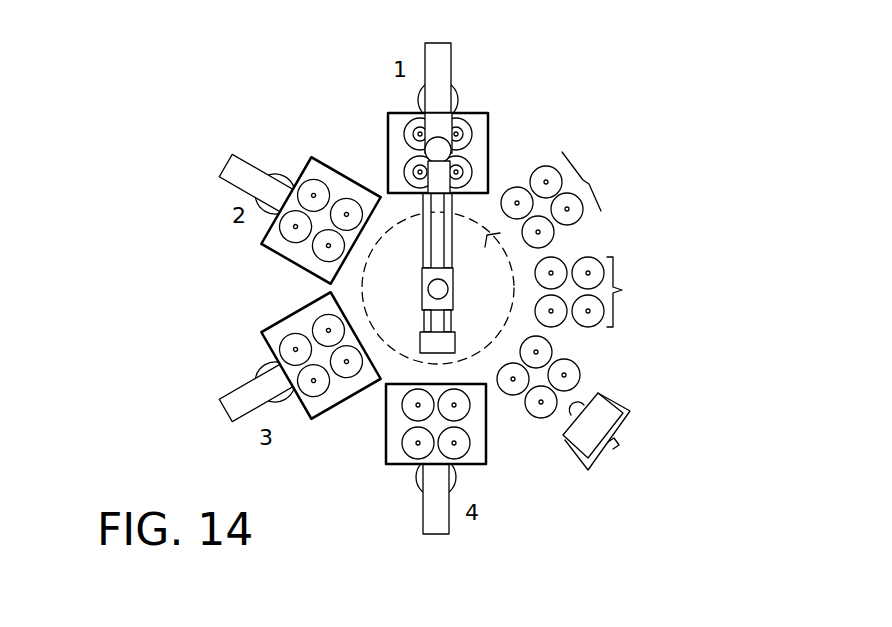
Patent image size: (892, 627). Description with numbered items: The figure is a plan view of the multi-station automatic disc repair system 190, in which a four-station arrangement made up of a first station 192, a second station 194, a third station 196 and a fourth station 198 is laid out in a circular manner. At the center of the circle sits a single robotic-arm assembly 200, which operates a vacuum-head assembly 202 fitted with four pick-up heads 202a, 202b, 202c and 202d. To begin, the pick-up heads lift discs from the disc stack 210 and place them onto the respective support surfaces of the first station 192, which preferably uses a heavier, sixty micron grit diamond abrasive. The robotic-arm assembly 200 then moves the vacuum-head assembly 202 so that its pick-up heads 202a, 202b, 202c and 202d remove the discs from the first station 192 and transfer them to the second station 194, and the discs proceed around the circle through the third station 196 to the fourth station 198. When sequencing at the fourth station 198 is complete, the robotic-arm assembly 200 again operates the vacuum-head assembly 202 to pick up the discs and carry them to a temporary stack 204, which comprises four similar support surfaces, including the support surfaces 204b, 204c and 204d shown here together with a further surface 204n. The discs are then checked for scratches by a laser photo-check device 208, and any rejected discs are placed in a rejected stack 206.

The automatic disc repair system 190 is at (167, 392).
The first station 192 is at (489, 113).
The second station 194 is at (315, 156).
The third station 196 is at (264, 331).
The fourth station 198 is at (486, 464).
The robotic-arm assembly 200 is at (452, 208).
The vacuum-head assembly 202 is at (410, 112).
The pick-up head 202a is at (476, 148).
The pick-up head 202b is at (480, 128).
The pick-up head 202c is at (386, 113).
The pick-up head 202d is at (403, 172).
The temporary stack 204 is at (599, 421).
The support surface 204b is at (553, 348).
The support surface 204c is at (506, 394).
The support surface 204d is at (541, 418).
The substrate 204n is at (578, 381).
The rejected stack 206 is at (623, 290).
The laser photo-check device 208 is at (619, 440).
The disc stack 210 is at (566, 200).